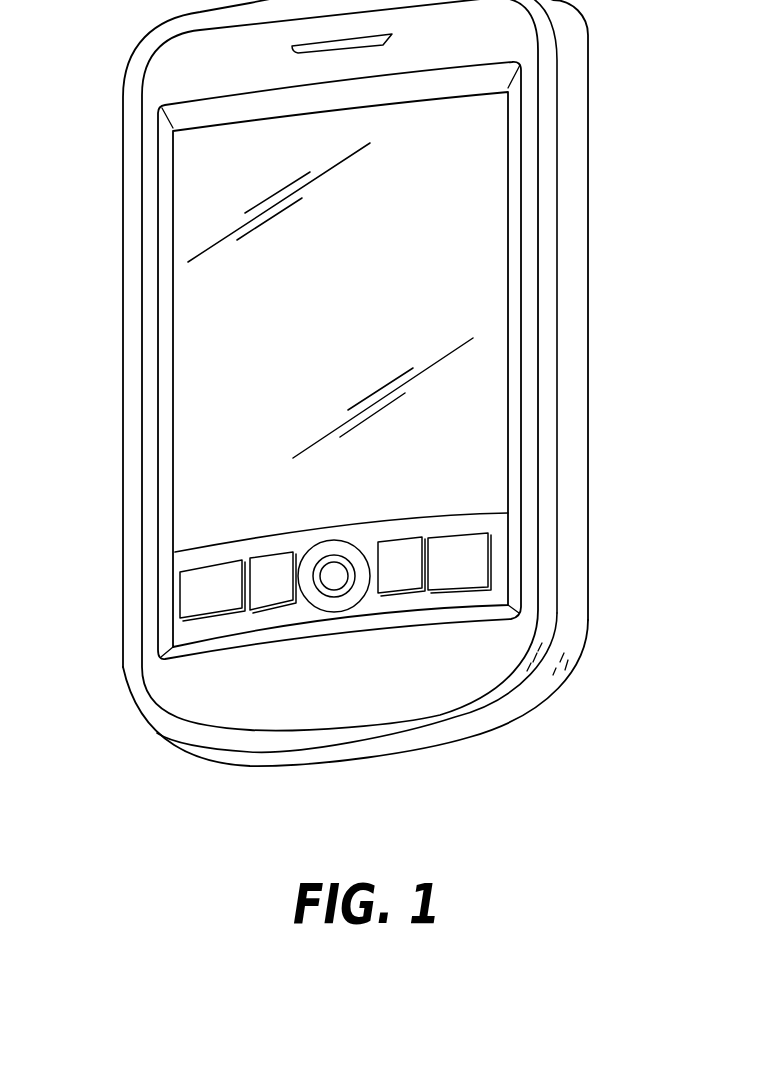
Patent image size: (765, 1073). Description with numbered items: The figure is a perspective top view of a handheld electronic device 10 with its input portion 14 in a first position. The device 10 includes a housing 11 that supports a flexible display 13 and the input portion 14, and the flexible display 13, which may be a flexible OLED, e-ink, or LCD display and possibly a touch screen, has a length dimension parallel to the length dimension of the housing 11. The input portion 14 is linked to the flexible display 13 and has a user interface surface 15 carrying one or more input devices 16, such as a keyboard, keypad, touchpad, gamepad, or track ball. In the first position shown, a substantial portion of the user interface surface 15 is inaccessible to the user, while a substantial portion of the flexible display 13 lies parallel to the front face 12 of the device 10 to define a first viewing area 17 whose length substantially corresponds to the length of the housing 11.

The handheld electronic device 10 is at (639, 126).
The housing 11 is at (588, 320).
The front face 12 is at (456, 49).
The flexible display 13 is at (173, 362).
The input portion 14 is at (170, 607).
The user interface surface 15 is at (490, 525).
The input devices 16 is at (490, 567).
The first viewing area 17 is at (339, 338).